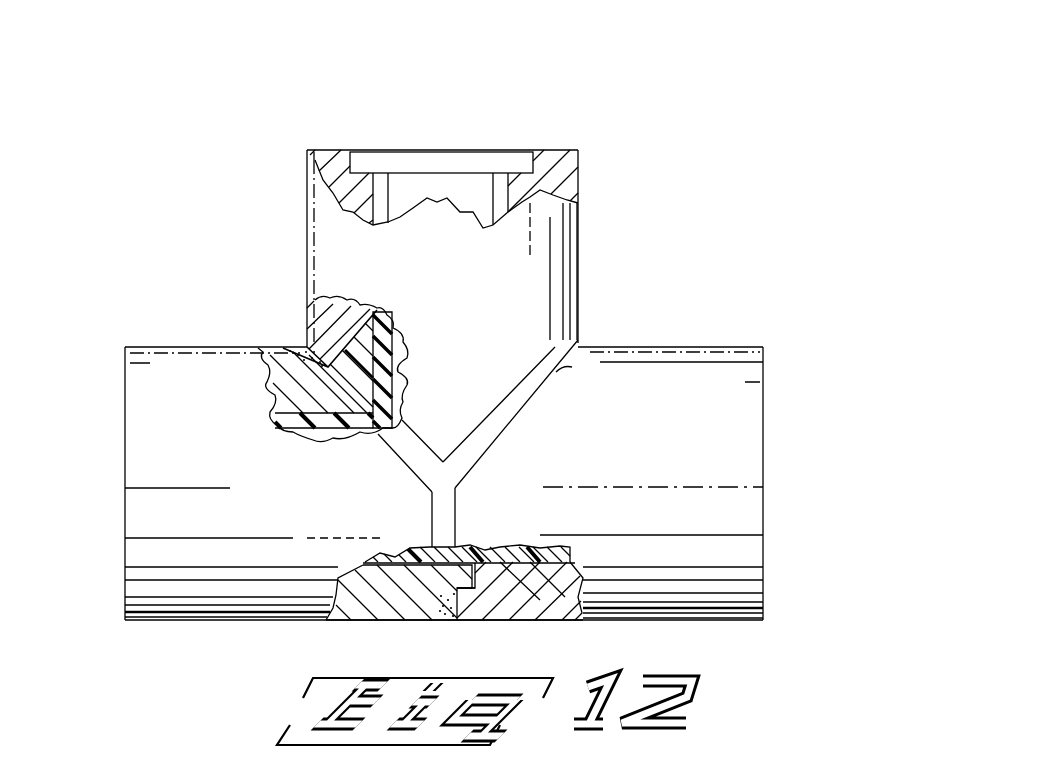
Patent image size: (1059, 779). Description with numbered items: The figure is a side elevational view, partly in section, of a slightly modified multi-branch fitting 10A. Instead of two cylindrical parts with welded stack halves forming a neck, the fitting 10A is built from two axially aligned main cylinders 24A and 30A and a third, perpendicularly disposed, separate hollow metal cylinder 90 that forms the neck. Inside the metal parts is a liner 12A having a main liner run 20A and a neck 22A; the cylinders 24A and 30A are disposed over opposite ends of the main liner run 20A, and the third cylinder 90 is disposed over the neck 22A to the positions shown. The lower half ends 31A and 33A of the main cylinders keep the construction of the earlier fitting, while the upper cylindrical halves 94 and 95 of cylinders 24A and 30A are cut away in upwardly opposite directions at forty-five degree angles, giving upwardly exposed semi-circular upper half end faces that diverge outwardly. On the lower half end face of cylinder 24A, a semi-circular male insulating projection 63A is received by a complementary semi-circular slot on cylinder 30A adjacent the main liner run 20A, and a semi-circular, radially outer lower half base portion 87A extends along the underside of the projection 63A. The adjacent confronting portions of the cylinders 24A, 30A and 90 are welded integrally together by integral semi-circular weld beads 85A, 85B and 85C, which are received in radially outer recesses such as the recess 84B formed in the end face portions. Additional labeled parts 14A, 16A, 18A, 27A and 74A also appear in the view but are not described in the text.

The multi-branch fitting 10A is at (238, 175).
The liner 12A is at (425, 433).
The body 14A is at (197, 310).
The first body portion 16A is at (138, 337).
The second body portion 18A is at (725, 253).
The main liner run 20A is at (517, 547).
The neck of the liner 22A is at (368, 345).
The main cylinder 24A is at (125, 412).
The cap 27A is at (366, 150).
The main cylinder 30A is at (765, 393).
The main cylinder lower half end 31A is at (423, 515).
The main cylinder lower half end 33A is at (467, 507).
The semi-circular male insulating projection 63A is at (442, 523).
The porous insert 74A is at (446, 620).
The radially outer recess 84B is at (578, 343).
The semi-circular weld bead 85A is at (573, 580).
The semi-circular weld bead 85B is at (413, 457).
The semi-circular weld bead 85C is at (620, 345).
The radially outer lower half base portion 87A is at (440, 615).
The hollow metal cylinder 90 is at (598, 105).
The upper cylindrical half 94 is at (210, 428).
The upper cylindrical half 95 is at (728, 430).